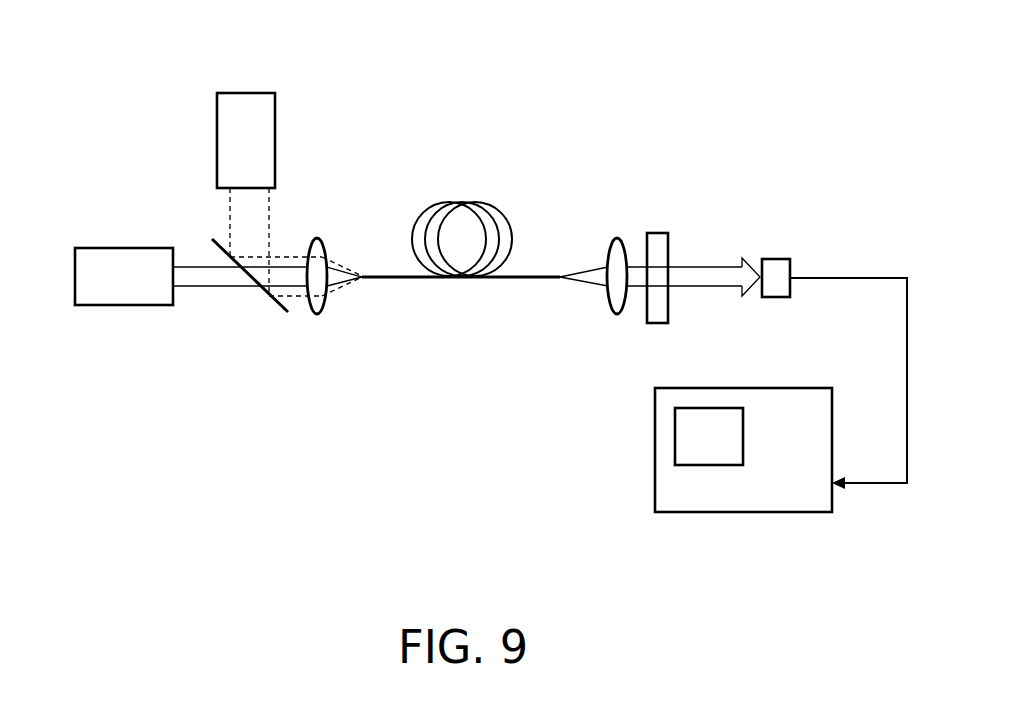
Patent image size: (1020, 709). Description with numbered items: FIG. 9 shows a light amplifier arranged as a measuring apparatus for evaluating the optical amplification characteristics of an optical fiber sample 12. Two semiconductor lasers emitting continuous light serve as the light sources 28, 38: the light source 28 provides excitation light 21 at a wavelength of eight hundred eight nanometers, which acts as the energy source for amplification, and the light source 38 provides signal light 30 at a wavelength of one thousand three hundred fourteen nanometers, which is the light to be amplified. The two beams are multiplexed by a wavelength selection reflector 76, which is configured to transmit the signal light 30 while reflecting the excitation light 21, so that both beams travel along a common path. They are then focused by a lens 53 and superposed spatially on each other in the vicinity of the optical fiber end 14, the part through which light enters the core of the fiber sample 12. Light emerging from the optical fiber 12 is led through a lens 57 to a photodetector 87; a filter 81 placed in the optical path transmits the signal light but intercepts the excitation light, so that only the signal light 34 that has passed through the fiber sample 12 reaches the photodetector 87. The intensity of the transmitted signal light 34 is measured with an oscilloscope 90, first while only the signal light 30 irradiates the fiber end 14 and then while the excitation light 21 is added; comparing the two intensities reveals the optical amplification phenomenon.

The optical fiber sample 12 is at (490, 207).
The optical fiber end 14 is at (367, 288).
The excitation light 21 is at (260, 245).
The light source 28 is at (263, 155).
The signal light 30 is at (217, 282).
The signal light 34 is at (688, 278).
The light source 38 is at (135, 260).
The coupling lens 53 is at (322, 255).
The lens 57 is at (618, 260).
The wavelength selection reflector 76 is at (282, 310).
The filter 81 is at (660, 248).
The photodetector 87 is at (778, 267).
The oscilloscope 90 is at (748, 497).